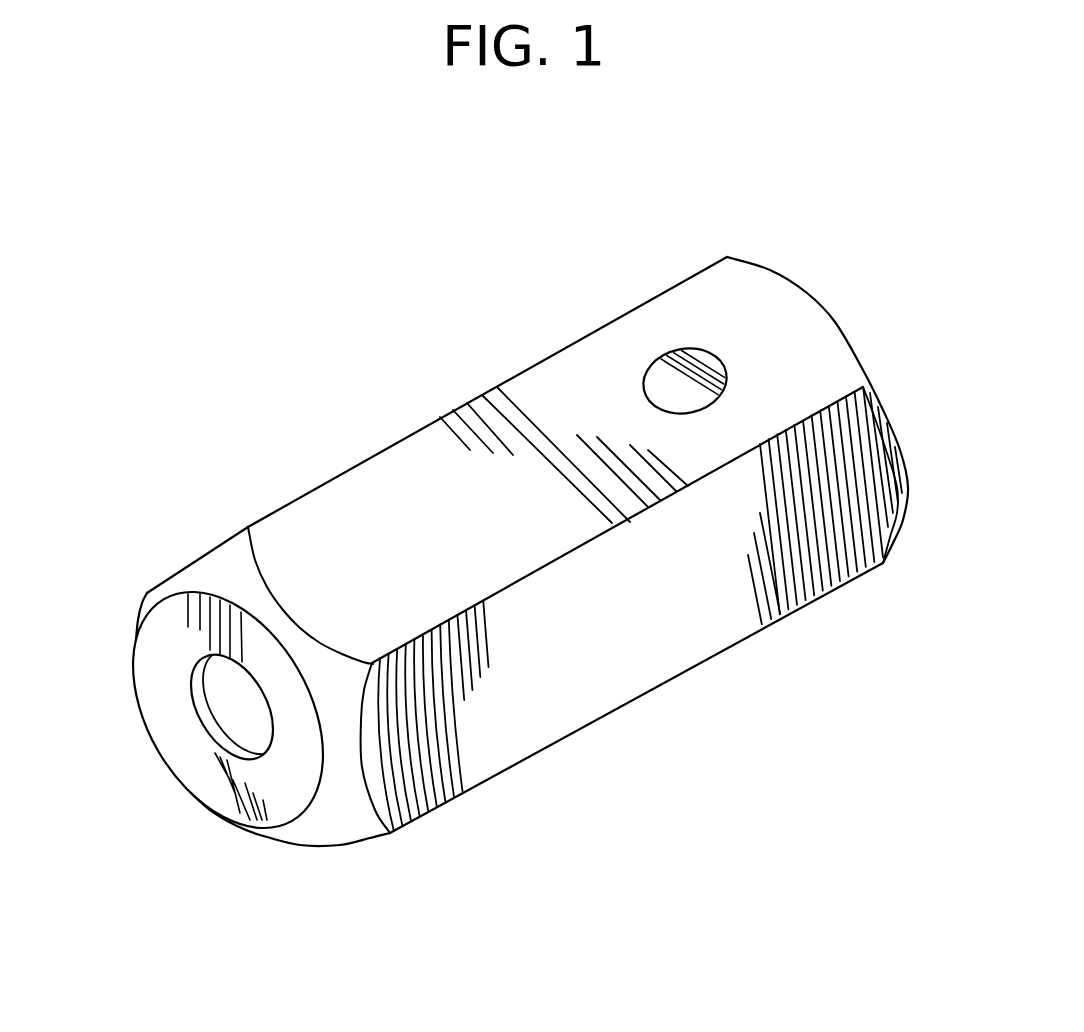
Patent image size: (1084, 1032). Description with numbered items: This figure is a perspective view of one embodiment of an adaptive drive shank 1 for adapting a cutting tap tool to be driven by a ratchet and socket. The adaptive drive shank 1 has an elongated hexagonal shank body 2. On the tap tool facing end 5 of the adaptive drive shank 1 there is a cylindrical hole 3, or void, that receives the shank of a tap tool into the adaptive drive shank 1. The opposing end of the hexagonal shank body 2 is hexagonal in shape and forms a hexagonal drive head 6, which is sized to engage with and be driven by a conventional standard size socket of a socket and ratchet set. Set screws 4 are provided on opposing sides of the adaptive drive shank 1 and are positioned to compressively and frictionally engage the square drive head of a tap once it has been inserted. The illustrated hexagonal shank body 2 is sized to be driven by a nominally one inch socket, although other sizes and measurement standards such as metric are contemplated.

The adaptive drive shank 1 is at (303, 323).
The elongated hexagonal shank body 2 is at (632, 657).
The cylindrical hole 3 is at (240, 710).
The set screws 4 is at (670, 382).
The tap tool facing end 5 is at (287, 770).
The hexagonal drive head 6 is at (823, 300).